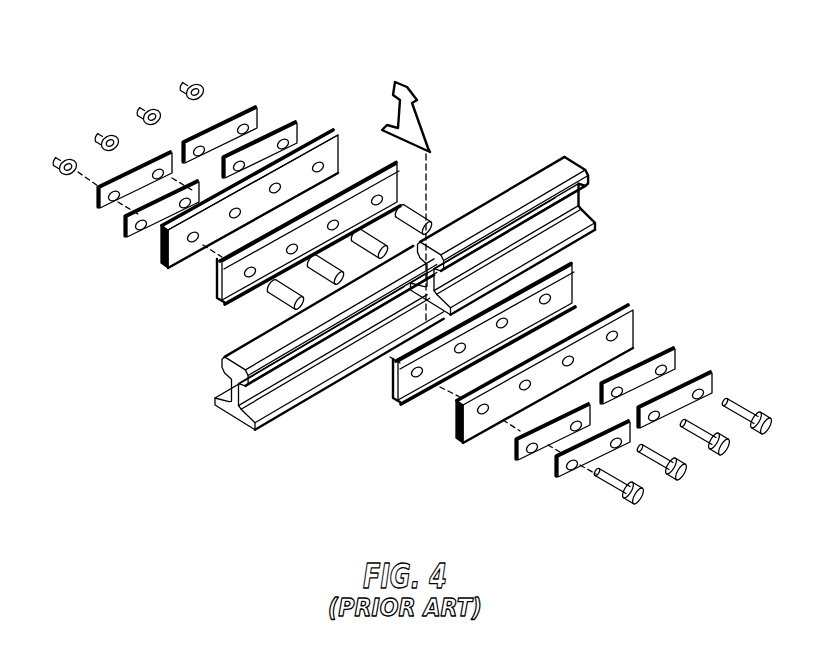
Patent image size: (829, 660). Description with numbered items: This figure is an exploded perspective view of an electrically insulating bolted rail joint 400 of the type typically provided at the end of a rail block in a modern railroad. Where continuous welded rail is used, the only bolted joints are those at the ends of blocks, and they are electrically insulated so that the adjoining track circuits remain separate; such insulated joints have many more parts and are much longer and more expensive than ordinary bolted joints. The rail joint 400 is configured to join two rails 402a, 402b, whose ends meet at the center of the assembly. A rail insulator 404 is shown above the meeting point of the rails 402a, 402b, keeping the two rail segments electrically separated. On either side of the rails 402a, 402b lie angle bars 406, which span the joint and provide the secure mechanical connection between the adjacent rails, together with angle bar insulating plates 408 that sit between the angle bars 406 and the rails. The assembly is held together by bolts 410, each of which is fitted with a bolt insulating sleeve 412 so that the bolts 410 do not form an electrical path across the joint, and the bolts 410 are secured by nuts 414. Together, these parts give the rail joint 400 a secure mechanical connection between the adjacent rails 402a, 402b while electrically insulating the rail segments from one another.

The rail joint 400 is at (618, 85).
The rail 402a is at (577, 158).
The rail 402b is at (227, 403).
The rail insulator 404 is at (412, 88).
The angle bar 406 is at (337, 130).
The angle bar insulating plate 408 is at (222, 268).
The bolt 410 is at (745, 405).
The bolt insulating sleeve 412 is at (380, 228).
The nut 414 is at (194, 86).